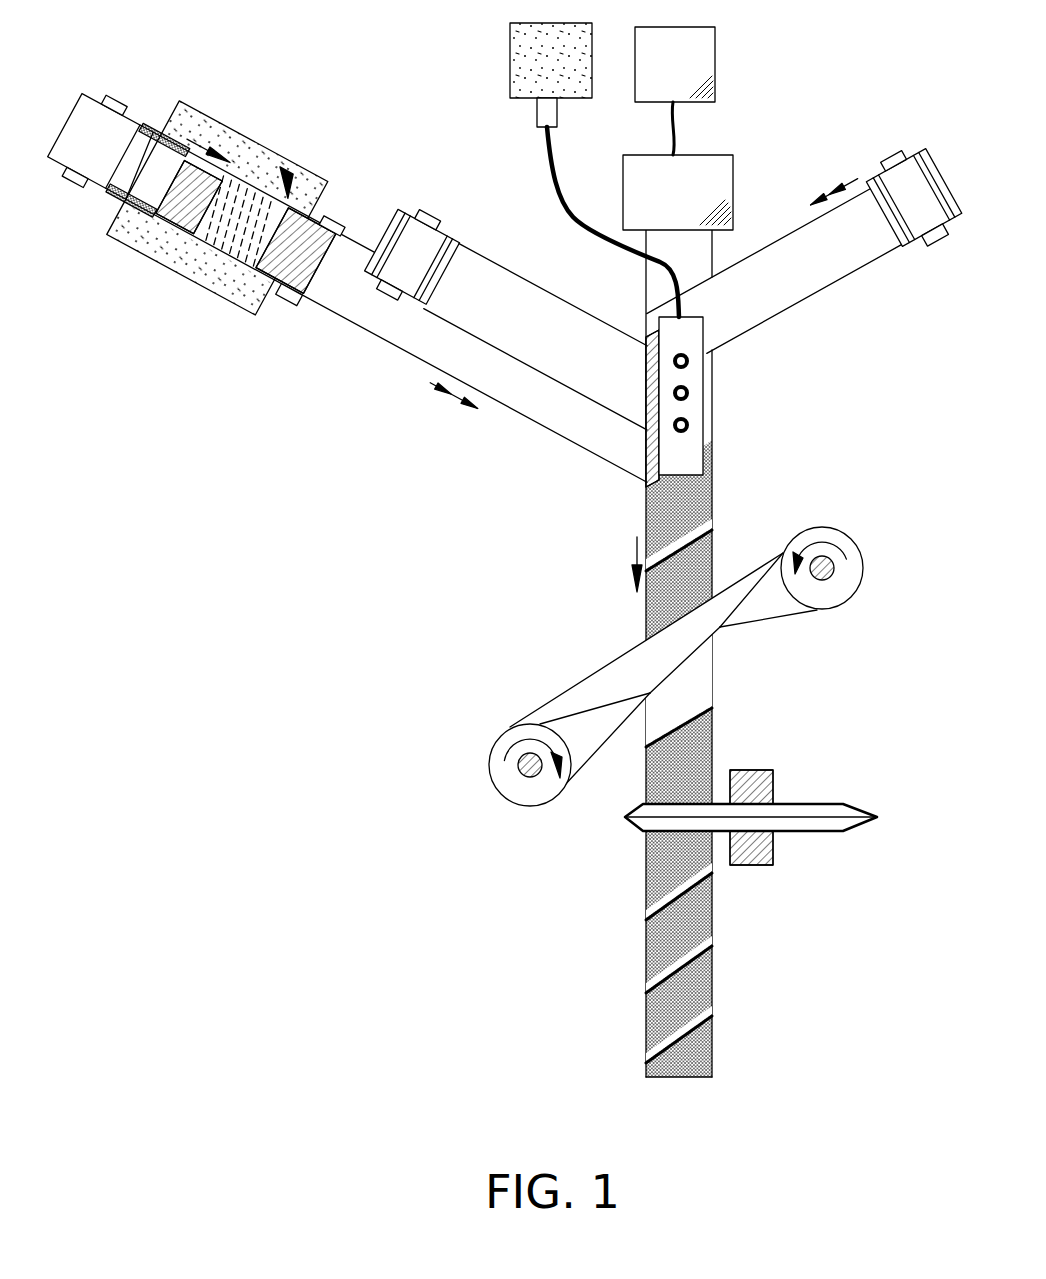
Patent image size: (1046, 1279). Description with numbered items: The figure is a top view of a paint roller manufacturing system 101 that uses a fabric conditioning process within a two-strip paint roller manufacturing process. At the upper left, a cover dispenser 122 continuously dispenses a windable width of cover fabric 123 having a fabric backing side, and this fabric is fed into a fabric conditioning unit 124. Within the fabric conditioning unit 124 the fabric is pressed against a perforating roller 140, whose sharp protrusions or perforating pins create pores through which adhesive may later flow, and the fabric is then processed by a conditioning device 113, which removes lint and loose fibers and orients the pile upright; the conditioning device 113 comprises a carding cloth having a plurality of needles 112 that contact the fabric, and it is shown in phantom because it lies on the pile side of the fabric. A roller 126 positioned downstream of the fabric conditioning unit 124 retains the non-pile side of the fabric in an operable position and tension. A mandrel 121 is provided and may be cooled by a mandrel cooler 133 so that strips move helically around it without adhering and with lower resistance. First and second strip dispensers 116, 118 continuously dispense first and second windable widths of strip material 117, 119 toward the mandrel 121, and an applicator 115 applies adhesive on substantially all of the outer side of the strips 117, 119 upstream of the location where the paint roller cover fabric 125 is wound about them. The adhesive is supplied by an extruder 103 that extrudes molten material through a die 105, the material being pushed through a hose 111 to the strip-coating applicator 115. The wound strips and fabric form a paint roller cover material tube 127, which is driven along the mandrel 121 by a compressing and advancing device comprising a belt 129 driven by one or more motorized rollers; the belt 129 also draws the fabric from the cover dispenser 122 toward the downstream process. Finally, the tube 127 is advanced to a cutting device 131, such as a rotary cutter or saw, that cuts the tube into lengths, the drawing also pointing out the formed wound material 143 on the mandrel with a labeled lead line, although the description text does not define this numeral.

The paint roller manufacturing system 101 is at (292, 55).
The extruder 103 is at (510, 43).
The die 105 is at (537, 112).
The hose 111 is at (552, 150).
The needles 112 is at (319, 211).
The conditioning device 113 is at (290, 166).
The applicator 115 is at (704, 394).
The first strip dispenser 116 is at (936, 243).
The first strip 117 is at (838, 281).
The second strip dispenser 118 is at (392, 225).
The second strip 119 is at (562, 300).
The mandrel 121 is at (712, 246).
The cover dispenser 122 is at (124, 102).
The cover fabric 123 is at (103, 197).
The fabric conditioning unit 124 is at (156, 283).
The paint roller cover fabric 125 is at (420, 361).
The roller 126 is at (292, 306).
The paint roller cover material tube 127 is at (645, 789).
The belt 129 is at (583, 682).
The cutting device 131 is at (747, 866).
The mandrel cooler 133 is at (716, 70).
The perforating roller 140 is at (200, 248).
The formed strand 143 is at (736, 981).